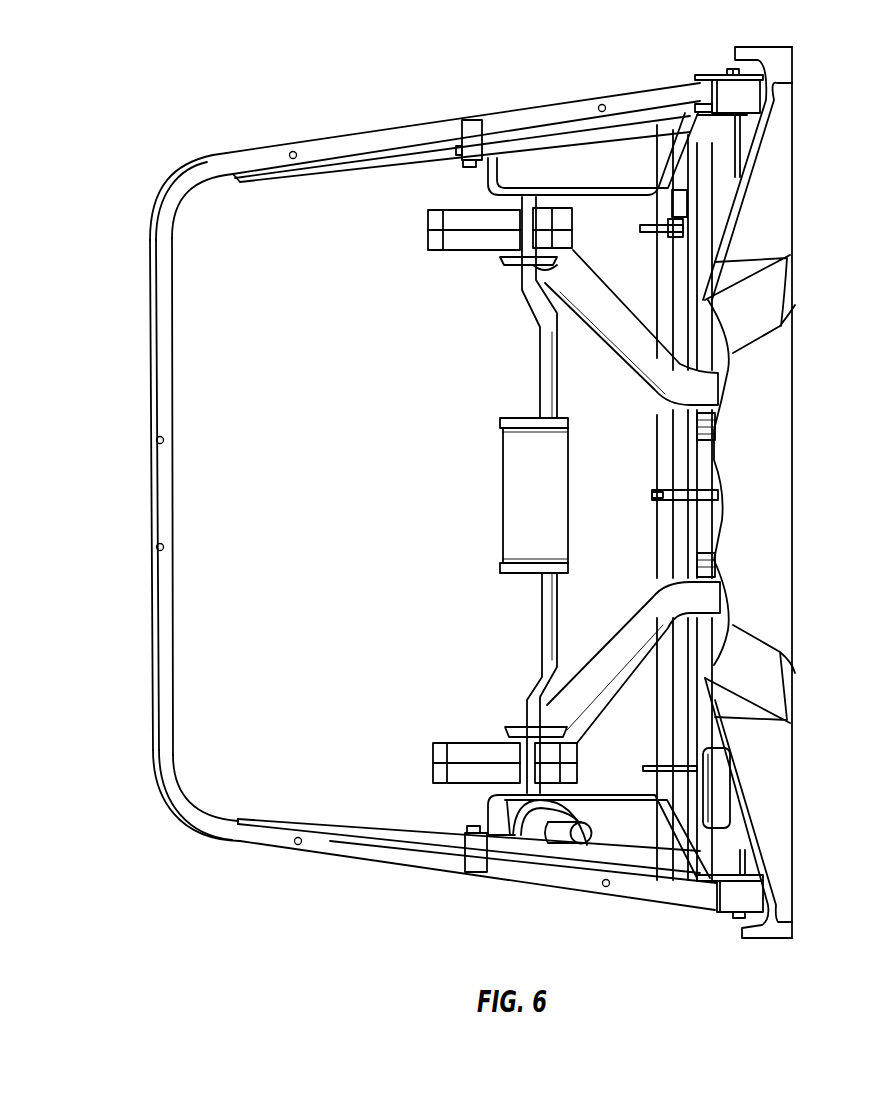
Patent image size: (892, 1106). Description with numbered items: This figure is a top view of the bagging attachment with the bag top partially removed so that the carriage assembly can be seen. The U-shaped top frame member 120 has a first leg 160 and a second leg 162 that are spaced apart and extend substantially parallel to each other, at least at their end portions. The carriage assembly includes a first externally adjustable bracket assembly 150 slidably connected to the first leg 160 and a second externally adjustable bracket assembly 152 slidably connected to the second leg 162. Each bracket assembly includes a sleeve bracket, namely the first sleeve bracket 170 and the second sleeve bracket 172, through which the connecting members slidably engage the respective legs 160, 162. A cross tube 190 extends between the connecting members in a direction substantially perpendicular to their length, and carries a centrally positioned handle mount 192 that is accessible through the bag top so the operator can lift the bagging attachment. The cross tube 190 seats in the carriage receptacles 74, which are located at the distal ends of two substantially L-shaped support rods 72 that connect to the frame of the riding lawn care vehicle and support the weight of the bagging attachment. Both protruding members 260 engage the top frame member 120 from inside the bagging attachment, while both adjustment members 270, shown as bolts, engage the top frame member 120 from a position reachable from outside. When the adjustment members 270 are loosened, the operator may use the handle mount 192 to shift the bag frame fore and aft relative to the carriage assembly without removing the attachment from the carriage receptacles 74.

The top frame member 120 is at (145, 443).
The second leg 162 is at (397, 125).
The first leg 160 is at (350, 847).
The protruding member 260 is at (462, 138).
The second sleeve bracket 172 is at (705, 92).
The first sleeve bracket 170 is at (714, 899).
The second externally adjustable bracket assembly 152 is at (582, 202).
The first externally adjustable bracket assembly 150 is at (603, 772).
The carriage receptacle 74 is at (420, 236).
The cross tube 190 is at (542, 398).
The handle mount 192 is at (505, 520).
The support rod 72 is at (628, 364).
The adjustment member 270 is at (716, 67).